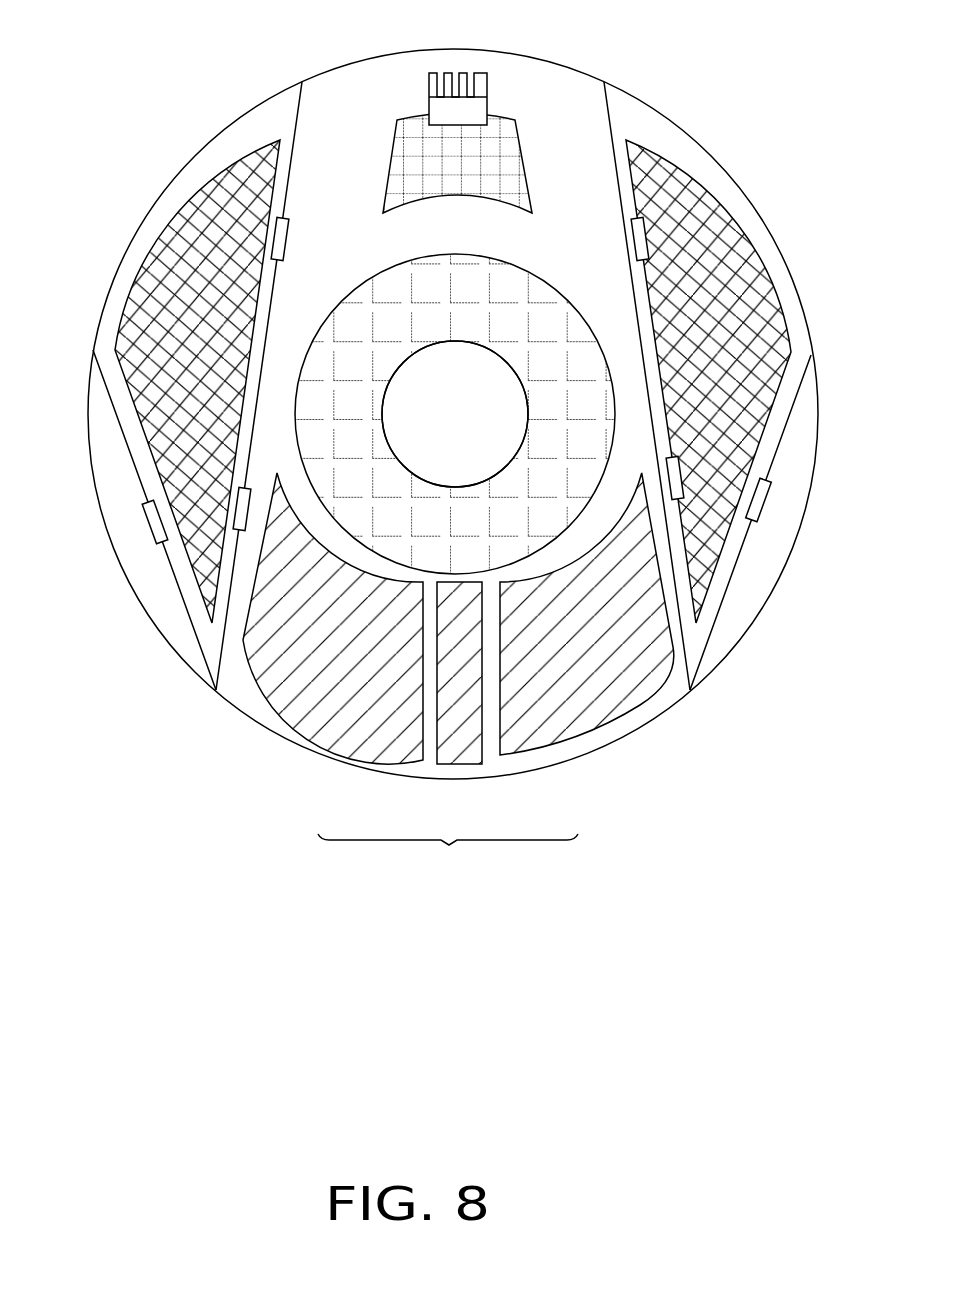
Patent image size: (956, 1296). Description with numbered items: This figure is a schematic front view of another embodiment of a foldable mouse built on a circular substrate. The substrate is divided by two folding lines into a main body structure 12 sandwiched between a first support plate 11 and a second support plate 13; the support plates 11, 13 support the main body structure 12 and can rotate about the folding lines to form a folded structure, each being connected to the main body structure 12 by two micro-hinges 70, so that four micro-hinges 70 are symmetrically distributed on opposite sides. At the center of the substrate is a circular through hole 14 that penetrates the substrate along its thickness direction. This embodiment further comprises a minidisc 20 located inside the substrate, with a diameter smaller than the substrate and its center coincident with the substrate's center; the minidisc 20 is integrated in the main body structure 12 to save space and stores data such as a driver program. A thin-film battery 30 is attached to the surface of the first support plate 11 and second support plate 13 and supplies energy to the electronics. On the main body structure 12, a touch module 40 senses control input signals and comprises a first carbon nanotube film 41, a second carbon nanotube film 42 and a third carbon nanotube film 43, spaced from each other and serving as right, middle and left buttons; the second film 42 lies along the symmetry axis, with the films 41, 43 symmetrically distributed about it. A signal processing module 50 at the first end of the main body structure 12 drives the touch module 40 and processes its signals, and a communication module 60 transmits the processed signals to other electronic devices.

The first support plate 11 is at (258, 127).
The main body structure 12 is at (562, 98).
The second support plate 13 is at (647, 127).
The through hole 14 is at (507, 363).
The minidisc 20 is at (349, 293).
The thin-film battery 30 is at (710, 277).
The touch module 40 is at (448, 852).
The first carbon nanotube film 41 is at (370, 703).
The second carbon nanotube film 42 is at (468, 703).
The third carbon nanotube film 43 is at (572, 700).
The signal processing module 50 is at (413, 130).
The communication module 60 is at (475, 105).
The micro-hinge 70 is at (185, 578).